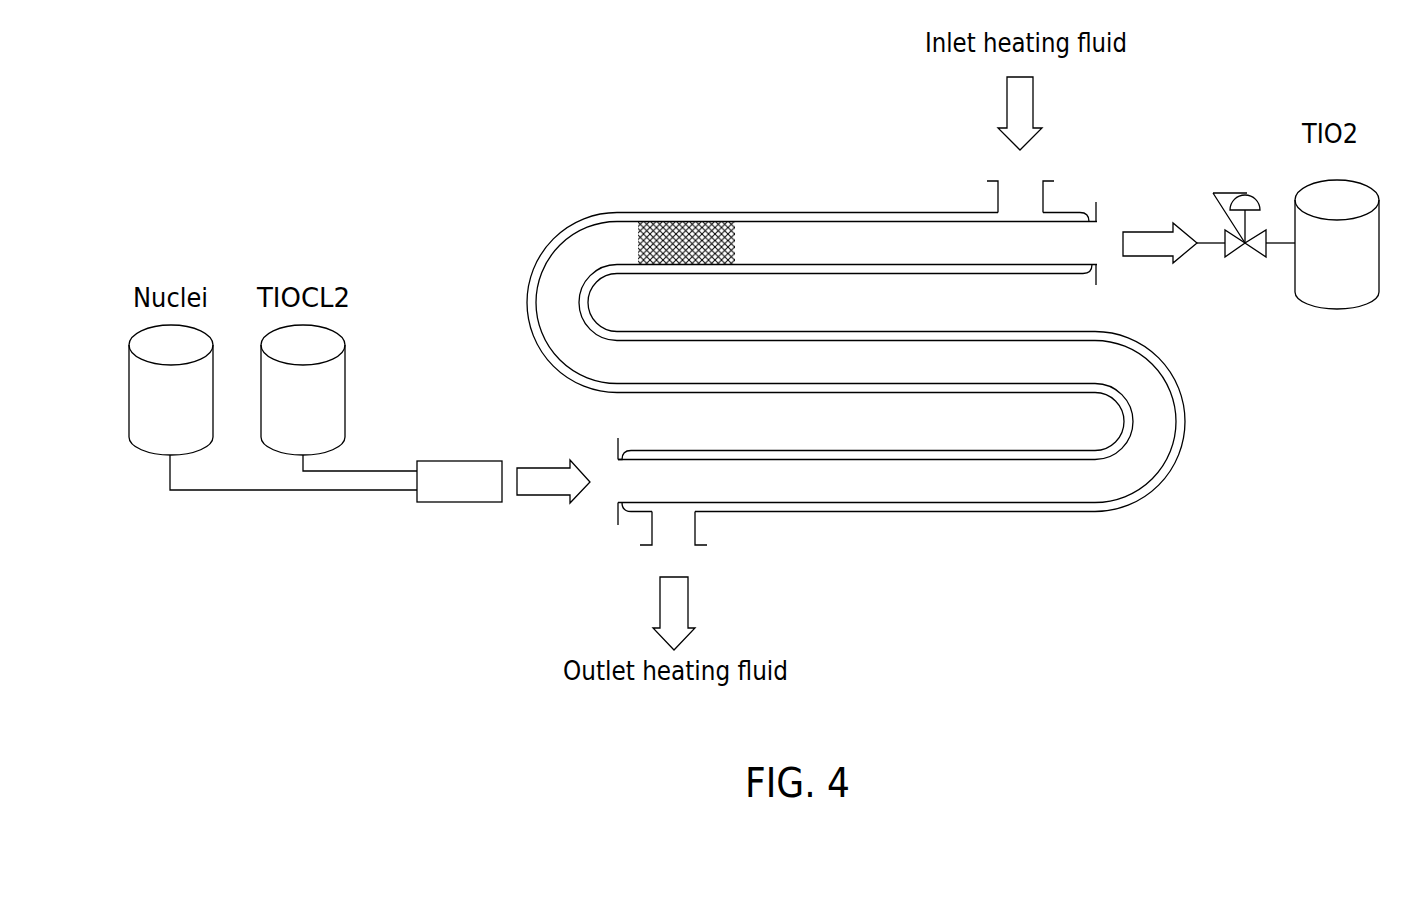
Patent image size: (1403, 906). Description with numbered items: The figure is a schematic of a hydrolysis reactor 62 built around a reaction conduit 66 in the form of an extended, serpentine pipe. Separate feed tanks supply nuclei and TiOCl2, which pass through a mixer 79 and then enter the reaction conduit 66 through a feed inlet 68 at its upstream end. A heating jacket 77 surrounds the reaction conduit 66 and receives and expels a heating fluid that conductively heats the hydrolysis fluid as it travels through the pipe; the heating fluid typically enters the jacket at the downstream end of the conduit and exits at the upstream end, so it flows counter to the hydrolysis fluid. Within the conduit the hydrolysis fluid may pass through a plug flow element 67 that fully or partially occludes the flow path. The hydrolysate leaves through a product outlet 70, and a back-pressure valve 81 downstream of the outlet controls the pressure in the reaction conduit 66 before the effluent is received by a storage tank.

The hydrolysis reactor 62 is at (574, 122).
The reaction conduit 66 is at (1172, 420).
The plug flow element 67 is at (689, 238).
The feed inlet 68 is at (597, 506).
The product outlet 70 is at (1116, 214).
The heating jacket 77 is at (942, 212).
The mixer 79 is at (458, 512).
The back-pressure valve 81 is at (1231, 246).